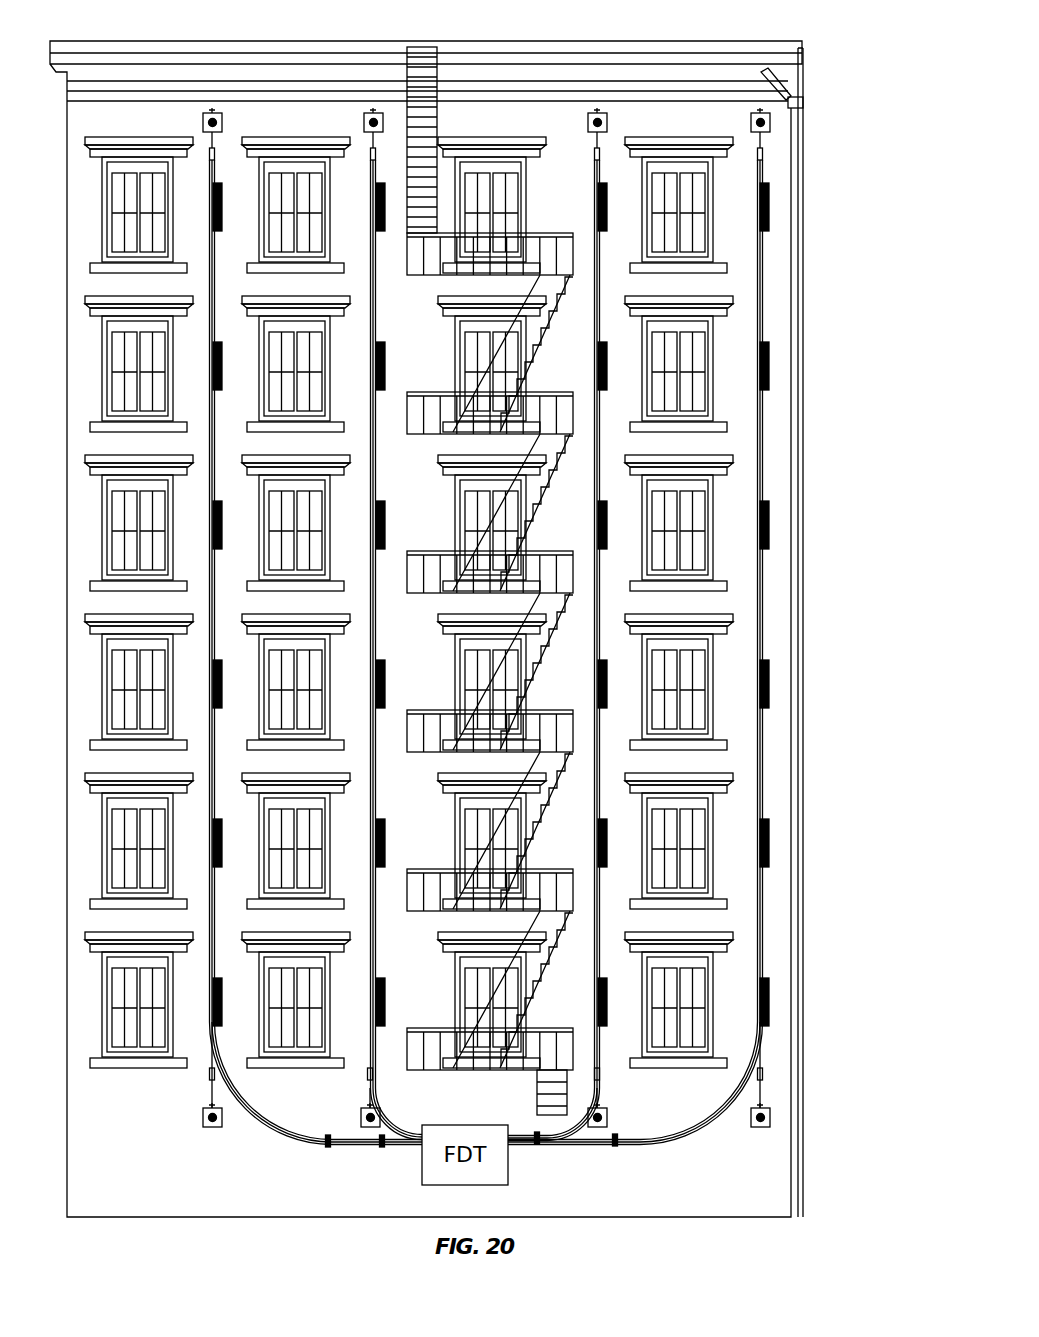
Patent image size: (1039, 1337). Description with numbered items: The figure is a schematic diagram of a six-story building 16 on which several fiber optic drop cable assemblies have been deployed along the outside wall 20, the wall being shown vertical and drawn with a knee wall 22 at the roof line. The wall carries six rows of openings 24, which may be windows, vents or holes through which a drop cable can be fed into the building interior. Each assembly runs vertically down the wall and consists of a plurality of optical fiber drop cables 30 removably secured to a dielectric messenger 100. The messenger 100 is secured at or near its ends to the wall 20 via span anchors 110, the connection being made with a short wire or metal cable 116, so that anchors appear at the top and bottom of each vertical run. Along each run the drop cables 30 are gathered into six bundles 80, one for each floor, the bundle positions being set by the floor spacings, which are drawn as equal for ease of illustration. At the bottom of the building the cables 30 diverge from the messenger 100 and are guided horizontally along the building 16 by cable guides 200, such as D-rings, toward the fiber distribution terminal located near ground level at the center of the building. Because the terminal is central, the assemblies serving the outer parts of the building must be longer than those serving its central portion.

The building 16 is at (824, 152).
The outside wall 20 is at (801, 248).
The knee wall 22 is at (807, 67).
The openings 24 is at (101, 212).
The optical fiber drop cables 30 is at (763, 435).
The bundles 80 is at (769, 342).
The dielectric messenger 100 is at (763, 763).
The span anchors 110 is at (203, 120).
The wire or metal cable 116 is at (210, 1099).
The cable guides 200 is at (382, 1150).